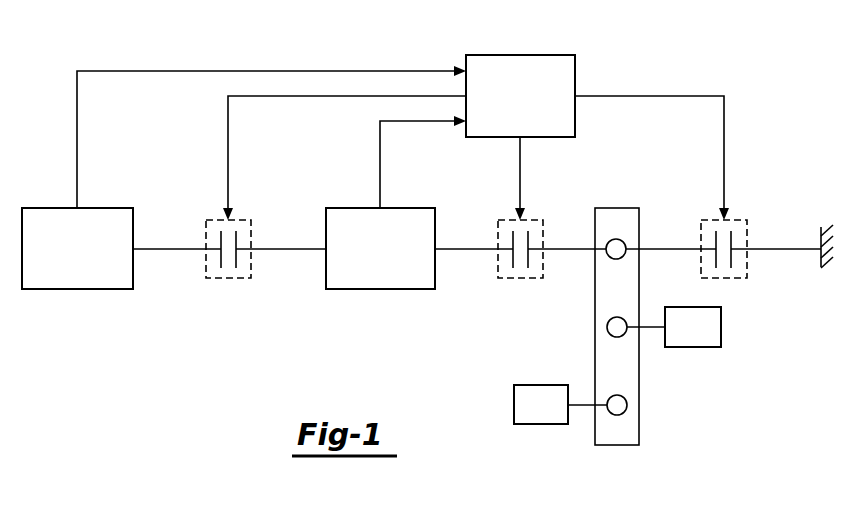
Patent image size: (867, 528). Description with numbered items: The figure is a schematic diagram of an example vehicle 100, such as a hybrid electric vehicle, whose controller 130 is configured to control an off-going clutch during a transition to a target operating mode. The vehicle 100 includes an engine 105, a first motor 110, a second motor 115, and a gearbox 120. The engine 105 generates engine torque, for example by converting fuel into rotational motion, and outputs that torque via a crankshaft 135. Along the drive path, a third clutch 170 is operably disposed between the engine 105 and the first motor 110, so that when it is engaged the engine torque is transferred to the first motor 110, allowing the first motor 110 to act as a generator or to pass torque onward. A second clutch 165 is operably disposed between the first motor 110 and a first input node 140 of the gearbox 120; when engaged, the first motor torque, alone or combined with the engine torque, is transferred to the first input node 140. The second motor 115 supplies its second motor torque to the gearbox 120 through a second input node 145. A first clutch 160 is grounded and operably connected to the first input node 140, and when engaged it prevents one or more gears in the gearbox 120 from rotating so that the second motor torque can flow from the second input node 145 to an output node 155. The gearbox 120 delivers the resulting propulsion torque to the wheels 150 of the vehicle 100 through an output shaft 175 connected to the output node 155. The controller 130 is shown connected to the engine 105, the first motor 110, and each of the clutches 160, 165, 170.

The vehicle 100 is at (726, 40).
The engine 105 is at (86, 258).
The first motor 110 is at (389, 258).
The second motor 115 is at (550, 415).
The gearbox 120 is at (617, 445).
The controller 130 is at (529, 106).
The crankshaft 135 is at (162, 250).
The first input node 140 is at (606, 246).
The second input node 145 is at (627, 407).
The wheels 150 is at (703, 337).
The output node 155 is at (609, 336).
The first clutch 160 is at (747, 266).
The second clutch 165 is at (543, 266).
The third clutch 170 is at (251, 266).
The output shaft 175 is at (650, 326).